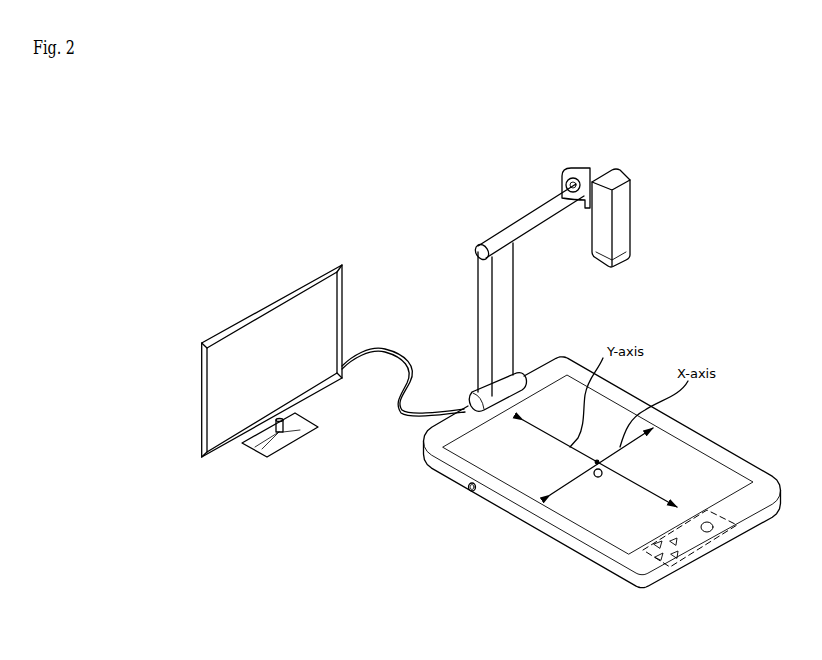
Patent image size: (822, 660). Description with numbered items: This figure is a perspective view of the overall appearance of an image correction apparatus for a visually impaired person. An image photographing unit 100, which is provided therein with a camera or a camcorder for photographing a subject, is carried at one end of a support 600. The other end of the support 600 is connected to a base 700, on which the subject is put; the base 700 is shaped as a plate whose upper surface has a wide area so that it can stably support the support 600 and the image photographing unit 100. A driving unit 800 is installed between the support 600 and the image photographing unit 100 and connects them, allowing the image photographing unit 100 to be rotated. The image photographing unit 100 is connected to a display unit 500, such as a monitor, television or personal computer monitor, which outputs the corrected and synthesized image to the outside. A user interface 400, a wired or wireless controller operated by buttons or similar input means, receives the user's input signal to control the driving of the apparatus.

The image photographing unit 100 is at (636, 182).
The user interface 400 is at (693, 543).
The display unit 500 is at (262, 302).
The support 600 is at (521, 213).
The base 700 is at (721, 440).
The driving unit 800 is at (576, 165).